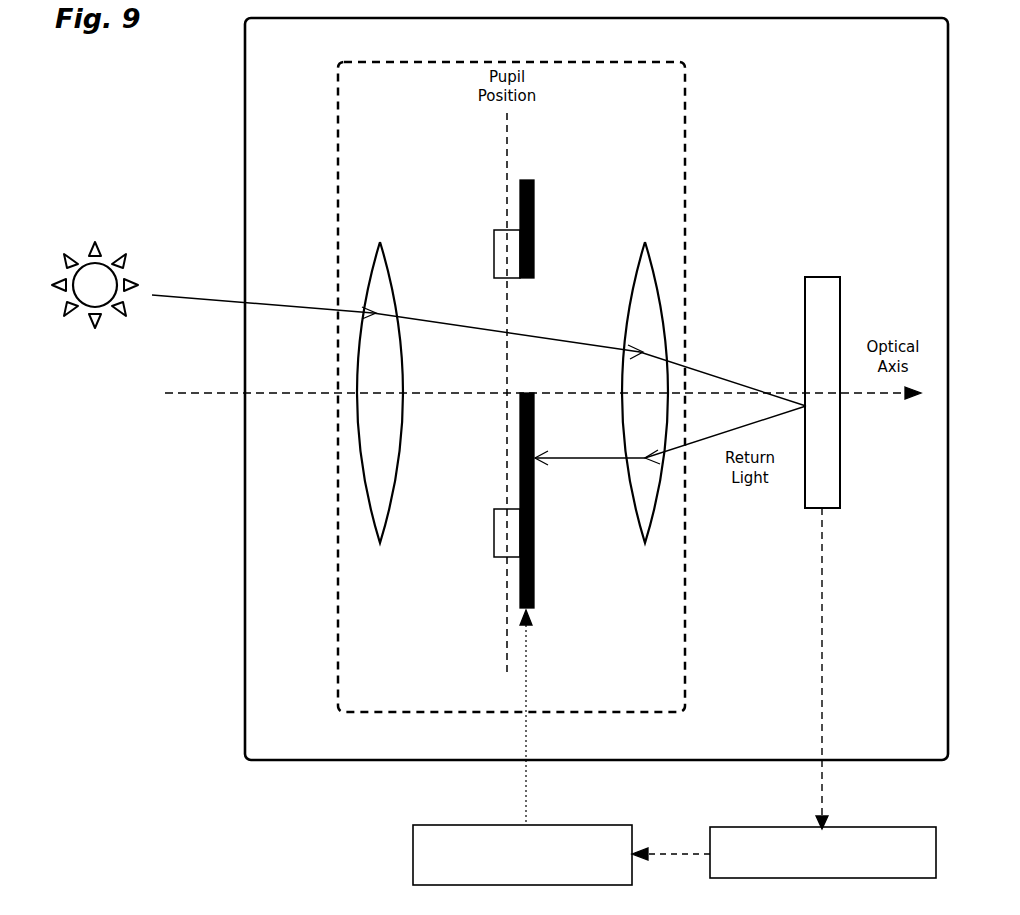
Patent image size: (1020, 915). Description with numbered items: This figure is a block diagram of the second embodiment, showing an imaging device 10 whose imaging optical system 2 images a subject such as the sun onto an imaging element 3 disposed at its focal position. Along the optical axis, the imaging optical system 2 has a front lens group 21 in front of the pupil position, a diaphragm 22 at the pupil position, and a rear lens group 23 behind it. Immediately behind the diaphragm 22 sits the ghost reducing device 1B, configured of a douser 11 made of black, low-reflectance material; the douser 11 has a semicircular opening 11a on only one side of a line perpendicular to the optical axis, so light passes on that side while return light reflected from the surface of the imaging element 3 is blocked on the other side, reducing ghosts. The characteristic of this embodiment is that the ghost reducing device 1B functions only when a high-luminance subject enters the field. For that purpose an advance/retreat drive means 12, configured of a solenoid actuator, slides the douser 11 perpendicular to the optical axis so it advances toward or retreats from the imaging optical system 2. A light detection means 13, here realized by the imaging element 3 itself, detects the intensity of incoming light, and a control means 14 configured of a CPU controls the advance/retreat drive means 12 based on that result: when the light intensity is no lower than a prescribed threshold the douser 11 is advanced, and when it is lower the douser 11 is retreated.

The imaging device 10 is at (245, 120).
The imaging optical system 2 is at (338, 192).
The front lens group 21 is at (381, 543).
The rear lens group 23 is at (645, 543).
The diaphragm 22 is at (494, 248).
The ghost reducing device 1B is at (542, 457).
The douser 11 is at (534, 553).
The opening 11a is at (534, 280).
The imaging element 3 is at (823, 277).
The light detection means 13 is at (829, 334).
The advance/retreat drive means 12 is at (413, 855).
The control means 14 is at (762, 827).